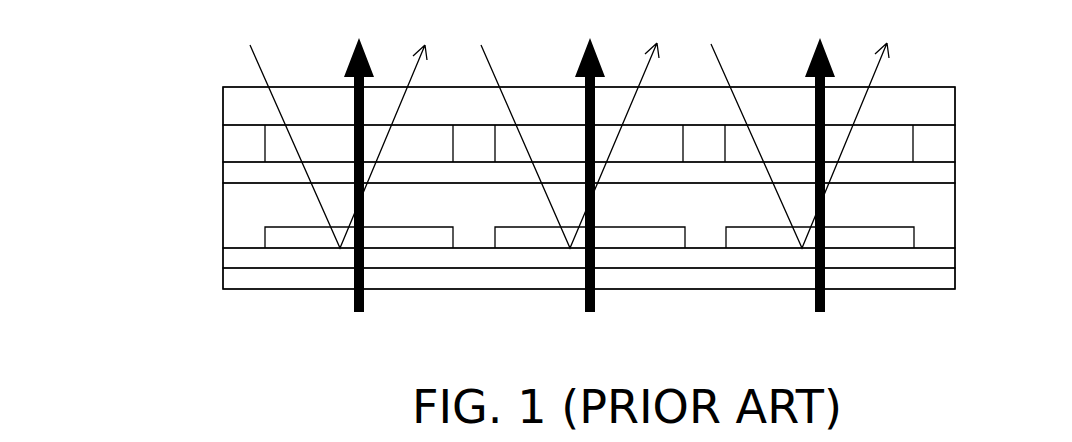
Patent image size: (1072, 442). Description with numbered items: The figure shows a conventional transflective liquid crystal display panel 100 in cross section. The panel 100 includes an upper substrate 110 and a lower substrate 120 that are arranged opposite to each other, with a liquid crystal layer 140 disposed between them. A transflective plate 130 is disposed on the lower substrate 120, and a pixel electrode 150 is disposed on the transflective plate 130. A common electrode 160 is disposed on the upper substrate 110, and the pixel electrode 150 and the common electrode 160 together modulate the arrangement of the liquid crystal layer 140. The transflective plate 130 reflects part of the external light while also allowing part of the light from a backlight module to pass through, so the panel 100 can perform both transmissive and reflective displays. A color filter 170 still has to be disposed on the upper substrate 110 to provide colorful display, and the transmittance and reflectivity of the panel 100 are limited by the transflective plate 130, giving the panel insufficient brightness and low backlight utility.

The LCD panel 100 is at (995, 368).
The upper substrate 110 is at (918, 108).
The lower substrate 120 is at (935, 279).
The transflective plate 130 is at (940, 258).
The liquid crystal layer 140 is at (925, 209).
The pixel electrode 150 is at (873, 237).
The common electrode 160 is at (937, 173).
The color filter 170 is at (895, 146).